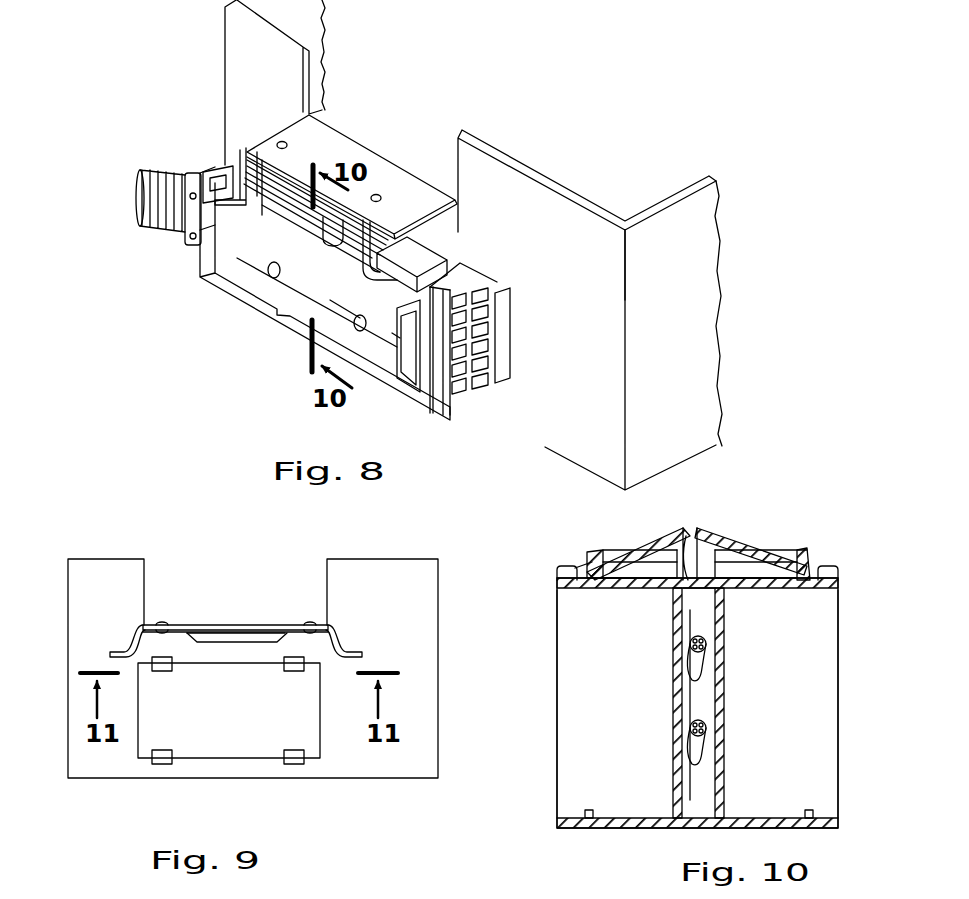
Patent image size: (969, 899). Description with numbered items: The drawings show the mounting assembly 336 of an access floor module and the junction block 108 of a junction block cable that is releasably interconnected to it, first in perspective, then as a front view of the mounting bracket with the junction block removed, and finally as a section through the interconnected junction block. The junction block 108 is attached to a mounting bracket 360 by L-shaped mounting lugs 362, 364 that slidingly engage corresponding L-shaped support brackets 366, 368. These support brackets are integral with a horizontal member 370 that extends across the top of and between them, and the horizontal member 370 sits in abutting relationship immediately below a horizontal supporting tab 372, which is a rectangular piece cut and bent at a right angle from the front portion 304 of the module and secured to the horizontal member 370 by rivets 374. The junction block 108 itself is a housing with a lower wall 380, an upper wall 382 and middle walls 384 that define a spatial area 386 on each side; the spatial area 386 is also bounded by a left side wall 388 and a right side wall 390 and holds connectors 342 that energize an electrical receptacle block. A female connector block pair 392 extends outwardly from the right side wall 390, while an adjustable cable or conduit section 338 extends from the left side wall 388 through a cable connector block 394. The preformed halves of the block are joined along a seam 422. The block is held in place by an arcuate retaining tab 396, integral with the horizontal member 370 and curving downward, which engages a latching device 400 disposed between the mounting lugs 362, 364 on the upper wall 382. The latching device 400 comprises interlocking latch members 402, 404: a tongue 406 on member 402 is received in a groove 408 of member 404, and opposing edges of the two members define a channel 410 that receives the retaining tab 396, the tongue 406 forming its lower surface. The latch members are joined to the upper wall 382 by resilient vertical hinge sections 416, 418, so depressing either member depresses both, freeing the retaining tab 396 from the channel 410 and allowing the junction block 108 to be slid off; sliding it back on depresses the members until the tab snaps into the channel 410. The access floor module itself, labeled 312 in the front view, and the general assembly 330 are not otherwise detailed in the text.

In FIG. 8, the junction block 108 is at (447, 452).
In FIG. 10, the junction block 108 is at (812, 530).
In FIG. 8, the front portion 304 is at (238, 62).
In FIG. 9, the front portion 304 is at (422, 672).
In FIG. 9, the module 312 is at (226, 742).
In FIG. 8, the connector 330 is at (497, 282).
In FIG. 8, the mounting assembly 336 is at (580, 301).
In FIG. 8, the adjustable cable or conduit section 338 is at (155, 222).
In FIG. 8, the connectors 342 is at (392, 311).
In FIG. 8, the mounting bracket 360 is at (362, 112).
In FIG. 9, the mounting bracket 360 is at (250, 582).
In FIG. 8, the L-shaped mounting lug 362 is at (230, 164).
In FIG. 10, the L-shaped mounting lug 362 is at (598, 550).
In FIG. 8, the L-shaped mounting lug 364 is at (447, 262).
In FIG. 8, the L-shaped support bracket 366 is at (250, 182).
In FIG. 9, the L-shaped support bracket 366 is at (120, 655).
In FIG. 8, the L-shaped support bracket 368 is at (412, 233).
In FIG. 9, the L-shaped support bracket 368 is at (345, 652).
In FIG. 8, the horizontal member 370 is at (145, 178).
In FIG. 9, the horizontal member 370 is at (208, 641).
In FIG. 8, the horizontal supporting tab 372 is at (377, 158).
In FIG. 9, the horizontal supporting tab 372 is at (215, 624).
In FIG. 8, the rivets 374 is at (287, 146).
In FIG. 9, the rivets 374 is at (162, 621).
In FIG. 8, the lower wall 380 is at (230, 292).
In FIG. 10, the lower wall 380 is at (607, 830).
In FIG. 8, the upper wall 382 is at (262, 210).
In FIG. 10, the upper wall 382 is at (770, 588).
In FIG. 8, the middle walls 384 is at (317, 288).
In FIG. 10, the middle walls 384 is at (672, 655).
In FIG. 8, the spatial area 386 is at (390, 345).
In FIG. 10, the spatial area 386 is at (657, 777).
In FIG. 8, the left side wall 388 is at (231, 254).
In FIG. 10, the left side wall 388 is at (618, 740).
In FIG. 8, the right side wall 390 is at (390, 333).
In FIG. 8, the female connector block pair 392 is at (487, 407).
In FIG. 8, the cable connector block 394 is at (222, 262).
In FIG. 8, the arcuate retaining tab 396 is at (338, 224).
In FIG. 9, the arcuate retaining tab 396 is at (243, 643).
In FIG. 10, the latching device 400 is at (728, 525).
In FIG. 8, the interlocking latch member 402 is at (293, 222).
In FIG. 10, the interlocking latch member 402 is at (590, 556).
In FIG. 10, the interlocking latch member 404 is at (745, 542).
In FIG. 10, the tongue 406 is at (686, 592).
In FIG. 10, the groove 408 is at (690, 528).
In FIG. 10, the channel 410 is at (690, 527).
In FIG. 10, the vertical hinge section 416 is at (570, 573).
In FIG. 10, the vertical hinge section 418 is at (808, 562).
In FIG. 8, the seam 422 is at (395, 272).